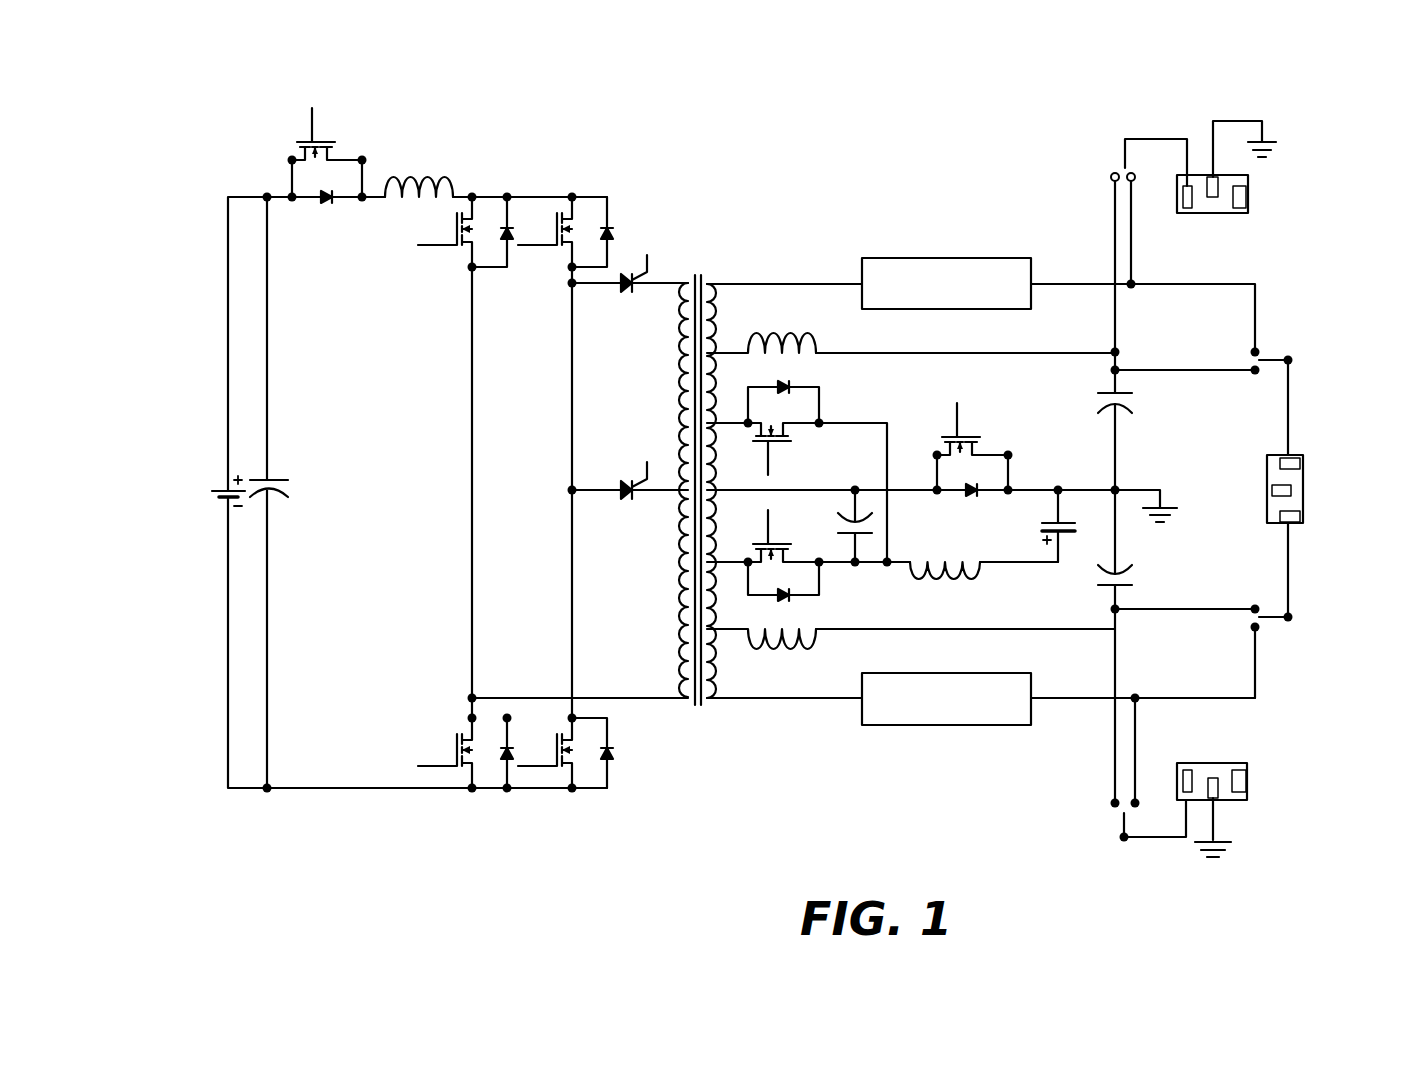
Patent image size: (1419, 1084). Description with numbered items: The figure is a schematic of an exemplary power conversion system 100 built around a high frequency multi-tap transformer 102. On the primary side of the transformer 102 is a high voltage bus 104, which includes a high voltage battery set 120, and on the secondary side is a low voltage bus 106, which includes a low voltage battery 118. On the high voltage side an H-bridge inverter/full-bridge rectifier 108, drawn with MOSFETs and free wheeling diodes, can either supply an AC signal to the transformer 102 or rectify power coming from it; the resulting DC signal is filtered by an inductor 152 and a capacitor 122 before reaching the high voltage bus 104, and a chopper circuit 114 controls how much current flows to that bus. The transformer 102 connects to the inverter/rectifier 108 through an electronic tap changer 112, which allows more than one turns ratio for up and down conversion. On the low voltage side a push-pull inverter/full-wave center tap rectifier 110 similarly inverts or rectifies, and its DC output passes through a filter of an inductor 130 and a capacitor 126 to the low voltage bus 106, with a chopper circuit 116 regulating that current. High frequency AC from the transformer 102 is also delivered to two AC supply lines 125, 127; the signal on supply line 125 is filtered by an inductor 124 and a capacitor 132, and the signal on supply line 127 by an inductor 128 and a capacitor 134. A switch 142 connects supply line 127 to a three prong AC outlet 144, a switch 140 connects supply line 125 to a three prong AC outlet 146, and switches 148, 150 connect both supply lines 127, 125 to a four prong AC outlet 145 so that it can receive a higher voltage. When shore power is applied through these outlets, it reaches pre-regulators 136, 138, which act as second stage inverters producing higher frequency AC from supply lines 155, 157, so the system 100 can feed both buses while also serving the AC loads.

The system 100 is at (272, 913).
The high frequency multi-tap transformer 102 is at (695, 712).
The high voltage bus 104 is at (228, 664).
The low voltage bus 106 is at (1040, 570).
The H-bridge inverter/full-bridge rectifier 108 is at (486, 176).
The push-pull inverter/full-wave center tap rectifier 110 is at (862, 413).
The electronic tap changer 112 is at (600, 468).
The chopper circuit 114 is at (291, 159).
The chopper circuit 116 is at (1020, 440).
The low voltage battery 118 is at (1046, 507).
The high voltage battery set 120 is at (204, 476).
The capacitor 122 is at (300, 490).
The inductor 124 is at (800, 665).
The AC supply line 125 is at (945, 629).
The capacitor 126 is at (868, 507).
The AC supply line 127 is at (955, 353).
The inductor 128 is at (777, 313).
The inductor 130 is at (940, 570).
The capacitor 132 is at (1148, 576).
The capacitor 134 is at (1148, 420).
The pre-regulator 136 is at (926, 297).
The pre-regulator 138 is at (926, 712).
The switch 140 is at (1124, 840).
The switch 142 is at (1140, 165).
The AC outlet 144 is at (1272, 183).
The AC outlet 145 is at (1310, 513).
The AC outlet 146 is at (1265, 802).
The switch 148 is at (1292, 360).
The switch 150 is at (1292, 617).
The inductor 152 is at (402, 200).
The supply line 155 is at (1082, 284).
The supply line 157 is at (1083, 698).